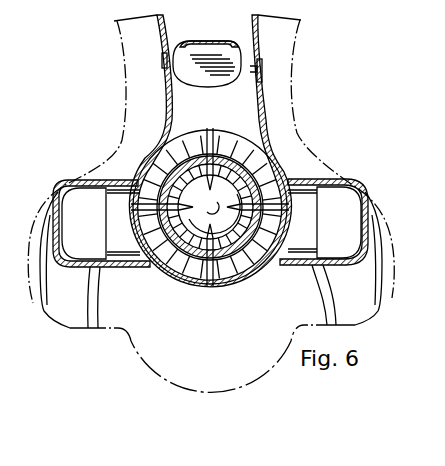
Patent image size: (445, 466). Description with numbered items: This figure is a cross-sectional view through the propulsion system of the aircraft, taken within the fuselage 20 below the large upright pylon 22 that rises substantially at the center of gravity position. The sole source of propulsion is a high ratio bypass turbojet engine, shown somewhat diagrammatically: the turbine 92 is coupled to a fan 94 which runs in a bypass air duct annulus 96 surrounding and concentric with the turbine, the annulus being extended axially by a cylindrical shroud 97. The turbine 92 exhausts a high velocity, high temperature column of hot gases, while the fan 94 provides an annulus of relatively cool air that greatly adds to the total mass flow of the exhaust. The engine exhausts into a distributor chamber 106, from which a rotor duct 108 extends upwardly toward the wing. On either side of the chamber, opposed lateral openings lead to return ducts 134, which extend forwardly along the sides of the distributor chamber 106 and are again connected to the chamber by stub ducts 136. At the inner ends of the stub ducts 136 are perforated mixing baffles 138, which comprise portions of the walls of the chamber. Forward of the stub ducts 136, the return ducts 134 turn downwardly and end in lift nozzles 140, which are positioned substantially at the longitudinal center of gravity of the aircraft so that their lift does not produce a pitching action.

The fuselage 20 is at (128, 352).
The pylon 22 is at (125, 76).
The turbine 92 is at (178, 272).
The fan 94 is at (186, 144).
The bypass air duct annulus 96 is at (242, 145).
The cylindrical shroud 97 is at (261, 141).
The distributor chamber 106 is at (238, 280).
The rotor duct 108 is at (258, 34).
The return duct 134 is at (72, 181).
The stub duct 136 is at (118, 180).
The mixing baffle 138 is at (106, 226).
The lift nozzle 140 is at (72, 323).